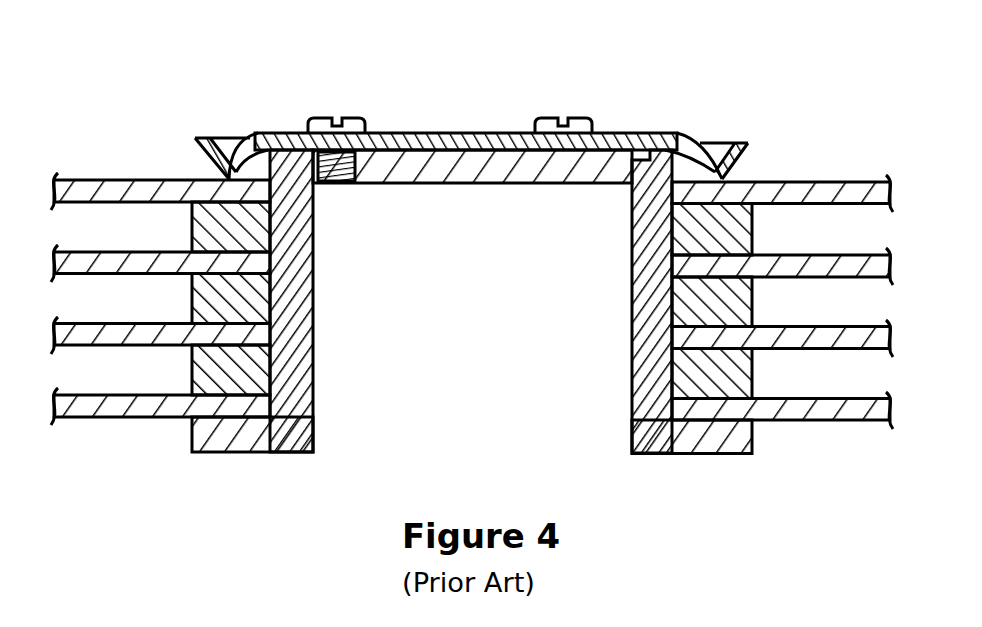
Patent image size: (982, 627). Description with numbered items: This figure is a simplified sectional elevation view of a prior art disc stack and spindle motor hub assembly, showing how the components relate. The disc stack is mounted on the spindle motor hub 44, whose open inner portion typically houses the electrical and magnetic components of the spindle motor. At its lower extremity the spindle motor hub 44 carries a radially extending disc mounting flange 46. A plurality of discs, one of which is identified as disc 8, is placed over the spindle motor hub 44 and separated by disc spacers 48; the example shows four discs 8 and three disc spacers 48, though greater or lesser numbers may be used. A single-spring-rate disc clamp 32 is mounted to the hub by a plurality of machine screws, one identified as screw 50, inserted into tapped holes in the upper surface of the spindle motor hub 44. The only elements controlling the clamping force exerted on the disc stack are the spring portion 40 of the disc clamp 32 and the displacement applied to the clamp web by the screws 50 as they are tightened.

The disc 8 is at (133, 178).
The disc spacer 48 is at (770, 182).
The spindle motor hub 44 is at (648, 210).
The disc mounting flange 46 is at (698, 440).
The disc clamp 32 is at (487, 133).
The machine screw 50 is at (347, 118).
The spring portion 40 is at (304, 125).